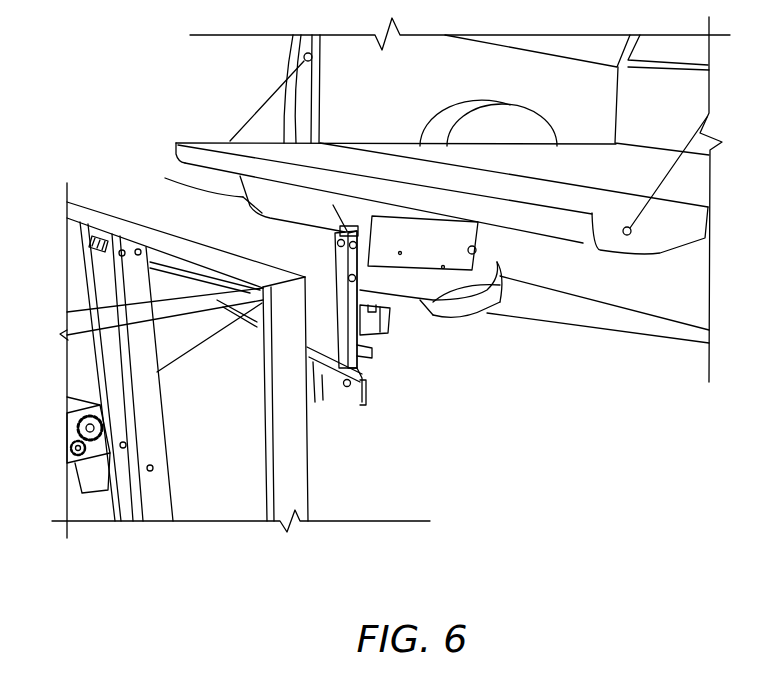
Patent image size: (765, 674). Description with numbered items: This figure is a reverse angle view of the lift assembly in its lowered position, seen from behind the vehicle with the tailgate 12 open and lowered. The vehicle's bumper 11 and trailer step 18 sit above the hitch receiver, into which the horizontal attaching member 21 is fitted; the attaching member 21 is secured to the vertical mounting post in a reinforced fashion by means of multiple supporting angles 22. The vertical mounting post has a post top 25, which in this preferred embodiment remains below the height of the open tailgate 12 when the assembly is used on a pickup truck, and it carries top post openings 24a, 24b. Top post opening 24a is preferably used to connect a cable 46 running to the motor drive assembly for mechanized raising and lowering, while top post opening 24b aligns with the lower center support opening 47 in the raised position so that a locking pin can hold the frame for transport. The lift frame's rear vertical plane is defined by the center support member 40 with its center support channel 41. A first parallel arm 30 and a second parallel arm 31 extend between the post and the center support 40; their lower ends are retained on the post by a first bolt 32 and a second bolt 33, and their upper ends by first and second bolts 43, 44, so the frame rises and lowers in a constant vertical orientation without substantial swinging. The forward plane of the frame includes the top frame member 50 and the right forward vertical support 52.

The bumper 11 is at (248, 197).
The tailgate 12 is at (176, 143).
The trailer step 18 is at (478, 297).
The horizontal attaching member 21 is at (367, 341).
The supporting angles 22 is at (363, 352).
The top post opening 24a is at (335, 244).
The top post opening 24b is at (357, 262).
The post top 25 is at (330, 230).
The first parallel arm 30 is at (362, 370).
The second parallel arm 31 is at (313, 373).
The first bolt 32 is at (367, 393).
The second bolt 33 is at (348, 388).
The center support member 40 is at (127, 380).
The center support channel 41 is at (127, 490).
The first bolt 43 is at (108, 263).
The second bolt 44 is at (140, 256).
The cable 46 is at (163, 368).
The lower center support opening 47 is at (126, 447).
The top frame member 50 is at (107, 213).
The right forward vertical support 52 is at (283, 488).